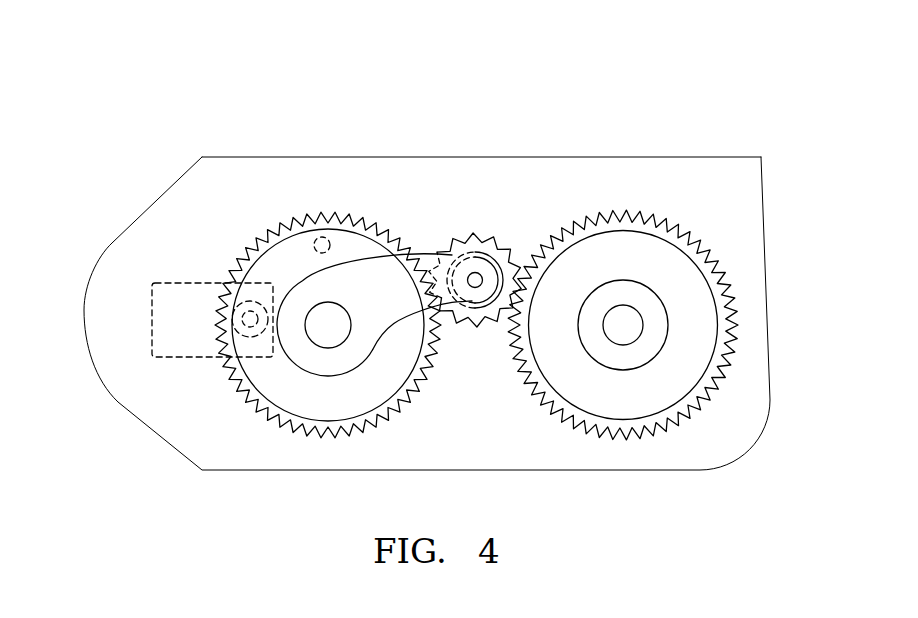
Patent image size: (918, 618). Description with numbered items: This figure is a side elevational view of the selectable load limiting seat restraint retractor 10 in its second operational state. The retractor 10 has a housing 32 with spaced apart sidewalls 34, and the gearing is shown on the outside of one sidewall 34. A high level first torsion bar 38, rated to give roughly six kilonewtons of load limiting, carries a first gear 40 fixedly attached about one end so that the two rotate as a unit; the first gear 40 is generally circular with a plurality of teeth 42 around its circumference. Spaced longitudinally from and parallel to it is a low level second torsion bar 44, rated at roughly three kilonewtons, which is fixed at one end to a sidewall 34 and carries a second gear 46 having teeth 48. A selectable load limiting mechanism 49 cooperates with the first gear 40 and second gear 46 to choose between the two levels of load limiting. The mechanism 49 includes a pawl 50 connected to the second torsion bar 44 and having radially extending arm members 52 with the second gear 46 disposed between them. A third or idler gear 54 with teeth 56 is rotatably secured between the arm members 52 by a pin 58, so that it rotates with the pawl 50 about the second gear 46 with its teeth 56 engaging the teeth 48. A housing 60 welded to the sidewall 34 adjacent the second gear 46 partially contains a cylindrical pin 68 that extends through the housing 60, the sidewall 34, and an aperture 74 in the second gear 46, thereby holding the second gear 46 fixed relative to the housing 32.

The selectable load limiting seat restraint retractor 10 is at (120, 177).
The housing 32 is at (762, 157).
The sidewalls 34 is at (605, 168).
The first torsion bar 38 is at (615, 333).
The first gear 40 is at (647, 402).
The teeth 42 is at (725, 365).
The second torsion bar 44 is at (335, 313).
The second gear 46 is at (312, 405).
The teeth 48 is at (230, 375).
The selectable load limiting mechanism 49 is at (298, 271).
The pawl 50 is at (403, 247).
The arm members 52 is at (383, 275).
The third gear 54 is at (472, 252).
The teeth 56 is at (494, 244).
The pin 58 is at (473, 278).
The housing 60 is at (162, 357).
The pin 68 is at (247, 325).
The aperture 74 is at (316, 238).